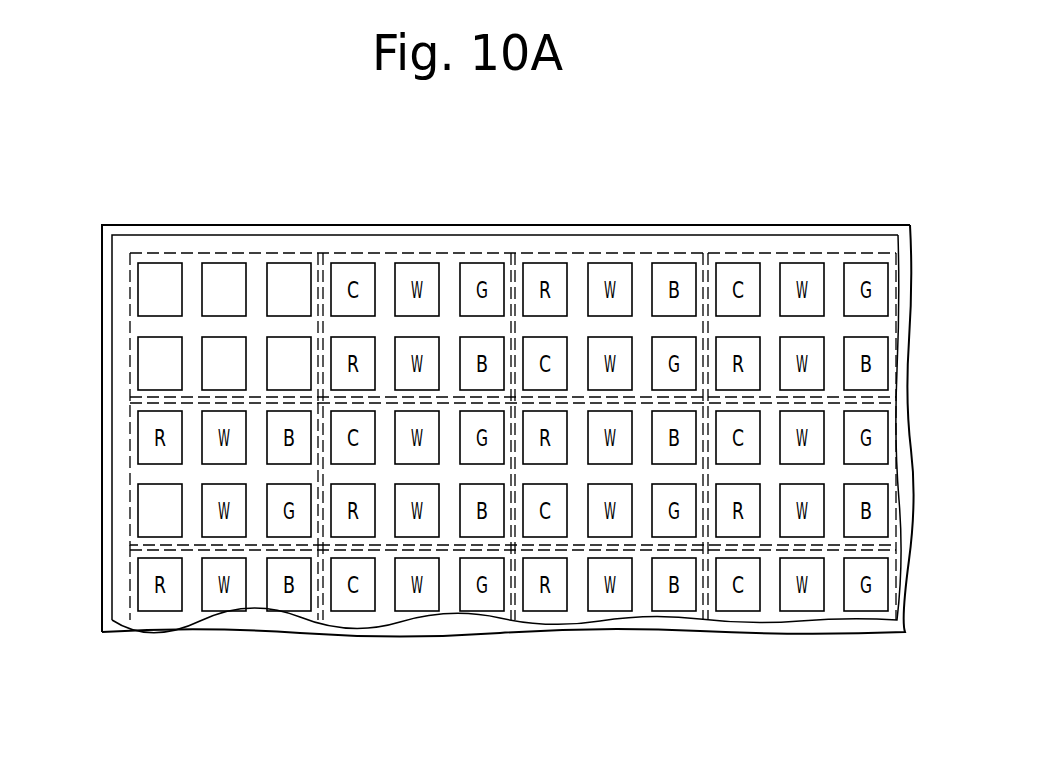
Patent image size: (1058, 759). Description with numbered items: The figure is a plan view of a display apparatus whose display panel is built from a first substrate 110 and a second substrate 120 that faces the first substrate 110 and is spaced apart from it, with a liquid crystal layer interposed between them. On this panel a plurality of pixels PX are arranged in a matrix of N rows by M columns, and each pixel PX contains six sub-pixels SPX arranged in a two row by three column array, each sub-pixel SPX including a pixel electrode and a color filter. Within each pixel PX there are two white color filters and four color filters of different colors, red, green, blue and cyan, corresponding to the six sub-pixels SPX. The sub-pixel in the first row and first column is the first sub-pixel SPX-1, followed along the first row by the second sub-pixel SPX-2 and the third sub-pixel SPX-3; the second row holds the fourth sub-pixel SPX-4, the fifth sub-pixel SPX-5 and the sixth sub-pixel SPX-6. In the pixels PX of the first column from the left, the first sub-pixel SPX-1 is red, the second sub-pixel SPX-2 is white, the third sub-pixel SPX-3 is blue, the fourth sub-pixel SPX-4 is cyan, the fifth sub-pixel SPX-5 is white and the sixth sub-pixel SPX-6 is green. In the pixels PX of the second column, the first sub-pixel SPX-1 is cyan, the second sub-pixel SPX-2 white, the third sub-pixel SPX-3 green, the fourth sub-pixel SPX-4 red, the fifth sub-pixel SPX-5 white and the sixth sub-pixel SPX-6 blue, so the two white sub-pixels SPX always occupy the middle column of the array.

The first substrate 110 is at (102, 402).
The second substrate 120 is at (112, 363).
The pixel PX is at (129, 467).
The sub-pixel SPX is at (138, 522).
The first sub-pixel SPX-1 is at (152, 262).
The second sub-pixel SPX-2 is at (227, 262).
The third sub-pixel SPX-3 is at (297, 263).
The fourth sub-pixel SPX-4 is at (175, 337).
The fifth sub-pixel SPX-5 is at (246, 348).
The sixth sub-pixel SPX-6 is at (303, 337).